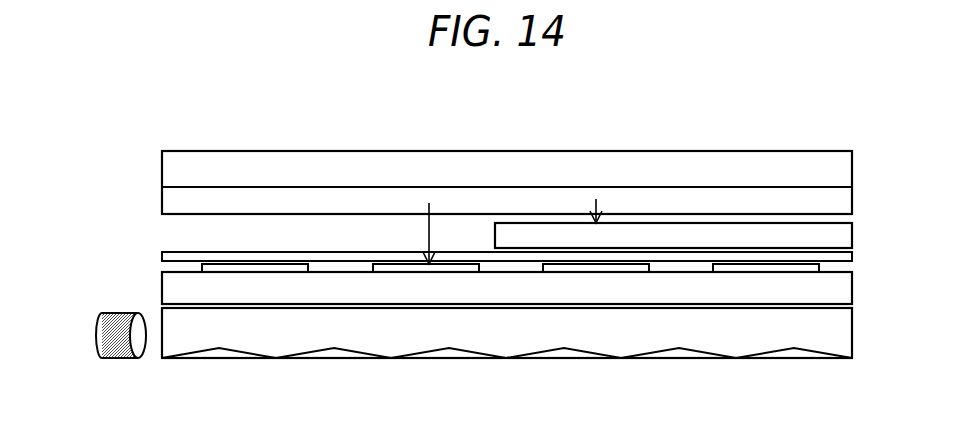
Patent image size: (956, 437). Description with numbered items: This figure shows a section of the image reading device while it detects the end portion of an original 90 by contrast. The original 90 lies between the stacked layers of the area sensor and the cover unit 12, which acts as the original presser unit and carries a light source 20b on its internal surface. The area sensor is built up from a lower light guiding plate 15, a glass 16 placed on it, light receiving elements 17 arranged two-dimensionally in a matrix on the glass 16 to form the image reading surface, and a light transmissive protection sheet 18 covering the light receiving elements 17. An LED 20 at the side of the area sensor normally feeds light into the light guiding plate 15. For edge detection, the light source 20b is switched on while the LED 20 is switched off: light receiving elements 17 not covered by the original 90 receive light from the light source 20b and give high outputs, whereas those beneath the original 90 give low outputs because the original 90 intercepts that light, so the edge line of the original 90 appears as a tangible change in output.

The cover unit 12 is at (472, 160).
The light source 20b is at (313, 195).
The original 90 is at (556, 233).
The light transmissive protection sheet 18 is at (643, 253).
The light receiving elements 17 is at (768, 261).
The glass 16 is at (764, 291).
The light guiding plate 15 is at (708, 331).
The LED 20 is at (115, 350).